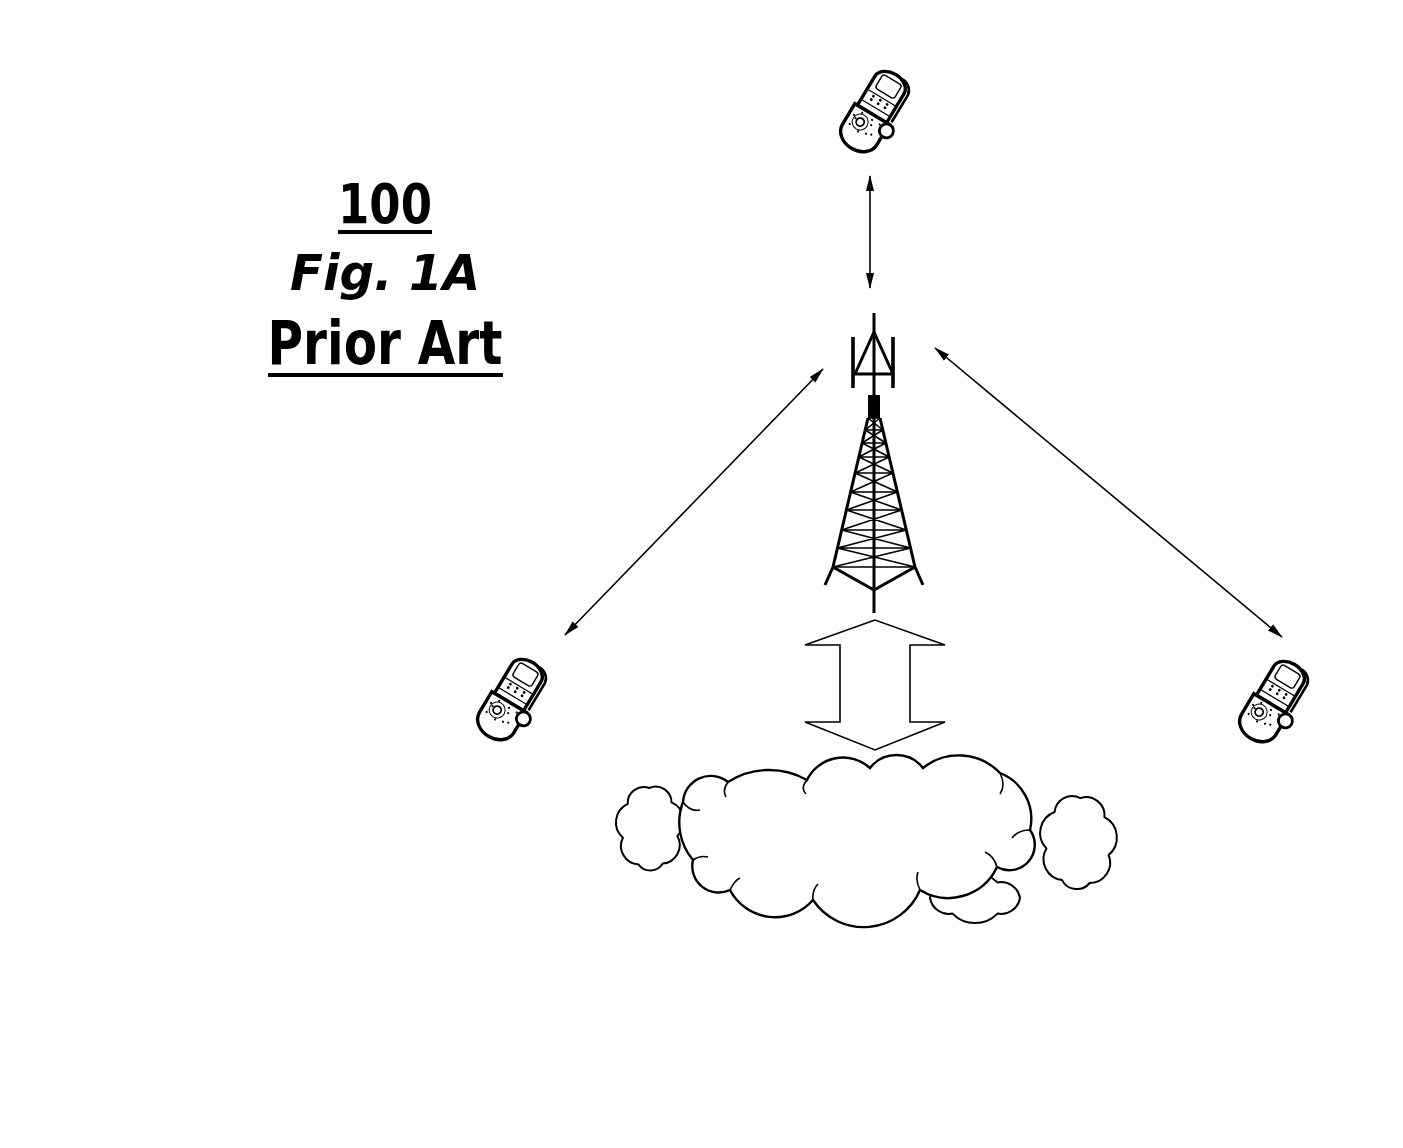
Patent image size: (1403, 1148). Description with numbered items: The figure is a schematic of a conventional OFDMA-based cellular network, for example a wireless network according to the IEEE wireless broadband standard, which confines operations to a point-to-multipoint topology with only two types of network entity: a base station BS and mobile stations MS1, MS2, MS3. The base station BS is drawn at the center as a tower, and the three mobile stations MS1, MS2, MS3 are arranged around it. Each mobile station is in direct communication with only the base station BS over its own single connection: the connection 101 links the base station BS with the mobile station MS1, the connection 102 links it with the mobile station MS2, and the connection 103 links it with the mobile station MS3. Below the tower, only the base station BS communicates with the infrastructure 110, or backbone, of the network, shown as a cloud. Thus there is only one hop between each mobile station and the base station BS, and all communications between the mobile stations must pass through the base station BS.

The connection 101 is at (871, 247).
The connection 102 is at (1158, 530).
The connection 103 is at (731, 463).
The infrastructure 110 is at (1043, 873).
The base station BS is at (877, 377).
The mobile station MS1 is at (834, 149).
The mobile station MS2 is at (1232, 738).
The mobile station MS3 is at (468, 728).